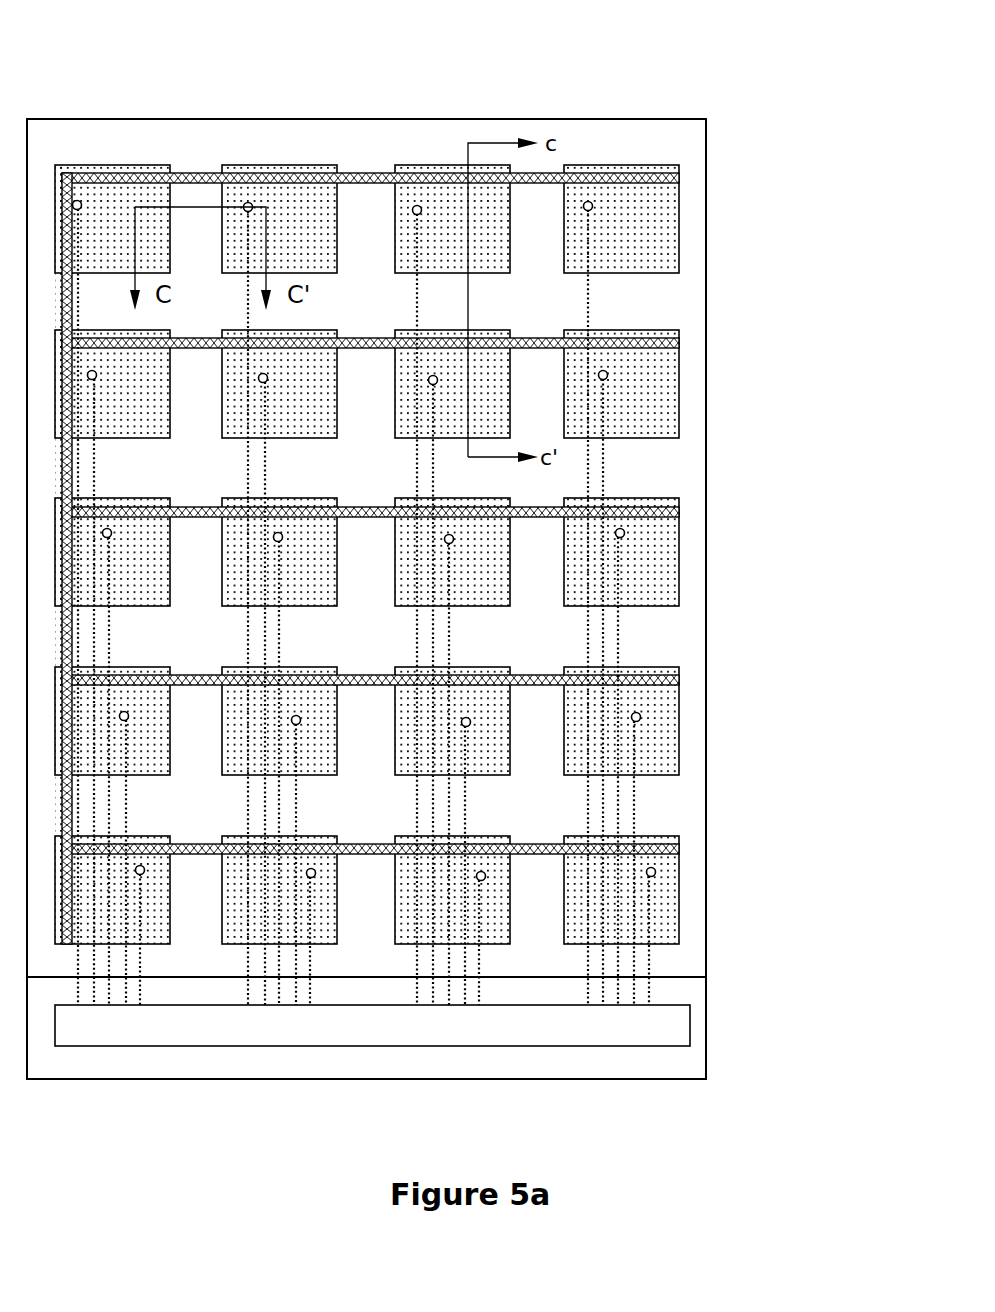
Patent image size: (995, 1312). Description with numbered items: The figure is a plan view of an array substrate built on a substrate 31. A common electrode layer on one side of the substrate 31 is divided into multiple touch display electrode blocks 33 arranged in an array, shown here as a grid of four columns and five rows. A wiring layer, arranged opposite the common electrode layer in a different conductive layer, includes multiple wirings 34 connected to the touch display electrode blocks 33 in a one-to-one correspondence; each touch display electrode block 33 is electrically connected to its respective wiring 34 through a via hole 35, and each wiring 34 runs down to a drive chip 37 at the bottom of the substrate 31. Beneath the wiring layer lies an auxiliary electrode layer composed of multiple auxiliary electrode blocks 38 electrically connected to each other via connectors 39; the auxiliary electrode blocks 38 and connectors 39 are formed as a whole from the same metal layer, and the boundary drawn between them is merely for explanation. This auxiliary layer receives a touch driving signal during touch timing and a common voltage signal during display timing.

The substrate 31 is at (520, 107).
The touch display electrode block 33 is at (697, 543).
The wiring 34 is at (639, 628).
The via hole 35 is at (626, 372).
The drive chip 37 is at (508, 1047).
The auxiliary electrode block 38 is at (117, 193).
The connector 39 is at (377, 160).